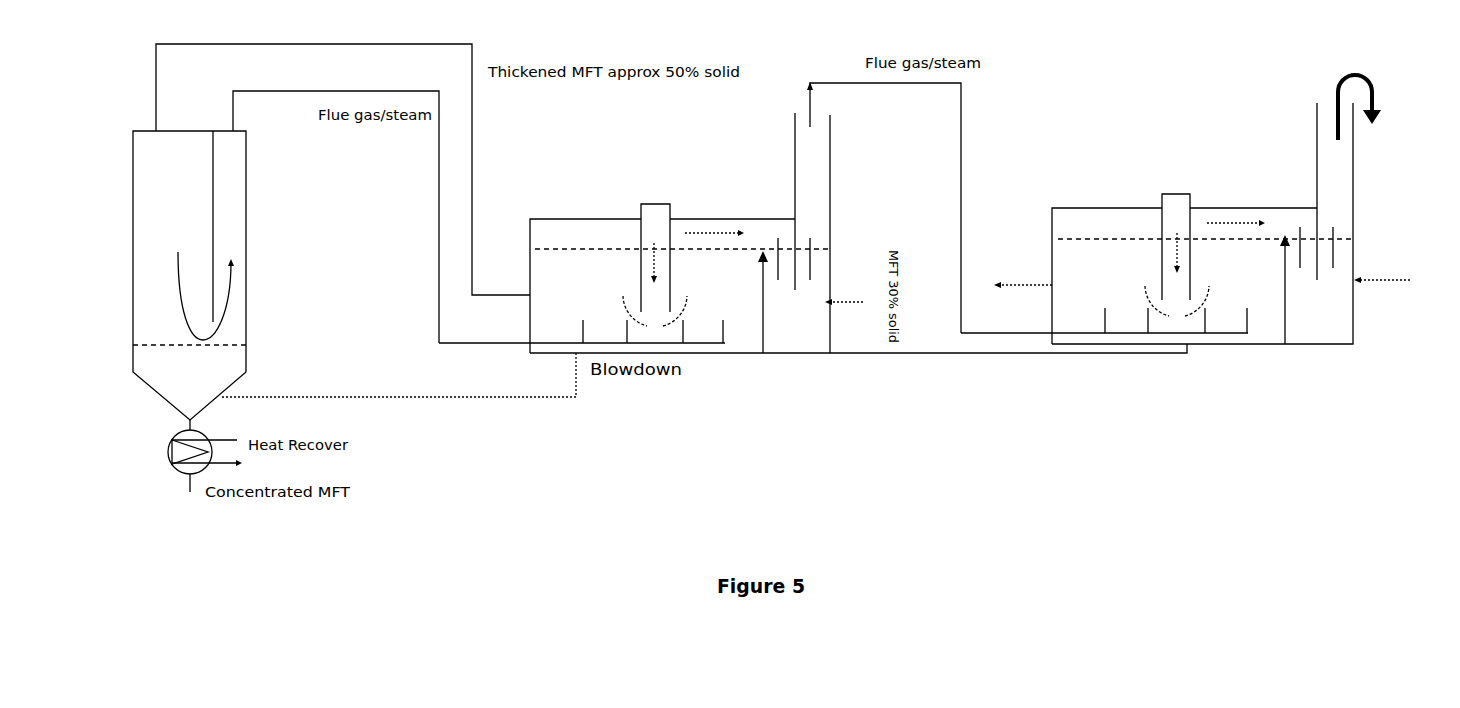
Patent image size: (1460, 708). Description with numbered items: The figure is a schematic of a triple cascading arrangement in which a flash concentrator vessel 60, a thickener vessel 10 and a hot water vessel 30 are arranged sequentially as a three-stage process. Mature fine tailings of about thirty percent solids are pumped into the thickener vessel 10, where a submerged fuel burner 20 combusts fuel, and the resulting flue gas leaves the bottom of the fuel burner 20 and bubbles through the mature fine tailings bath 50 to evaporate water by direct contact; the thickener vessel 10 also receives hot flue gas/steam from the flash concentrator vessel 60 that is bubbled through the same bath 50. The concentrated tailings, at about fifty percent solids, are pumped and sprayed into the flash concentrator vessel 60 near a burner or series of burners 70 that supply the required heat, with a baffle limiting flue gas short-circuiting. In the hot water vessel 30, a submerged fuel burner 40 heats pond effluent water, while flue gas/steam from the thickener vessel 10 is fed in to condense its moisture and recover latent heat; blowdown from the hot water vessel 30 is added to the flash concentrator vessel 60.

The thickener vessel 10 is at (570, 217).
The fuel burner 20 is at (668, 290).
The hot water vessel 30 is at (1250, 346).
The fuel burner 40 is at (1190, 282).
The mature fine tailings bath 50 is at (540, 328).
The flash concentrator vessel 60 is at (133, 355).
The burner or series of burners 70 is at (193, 126).